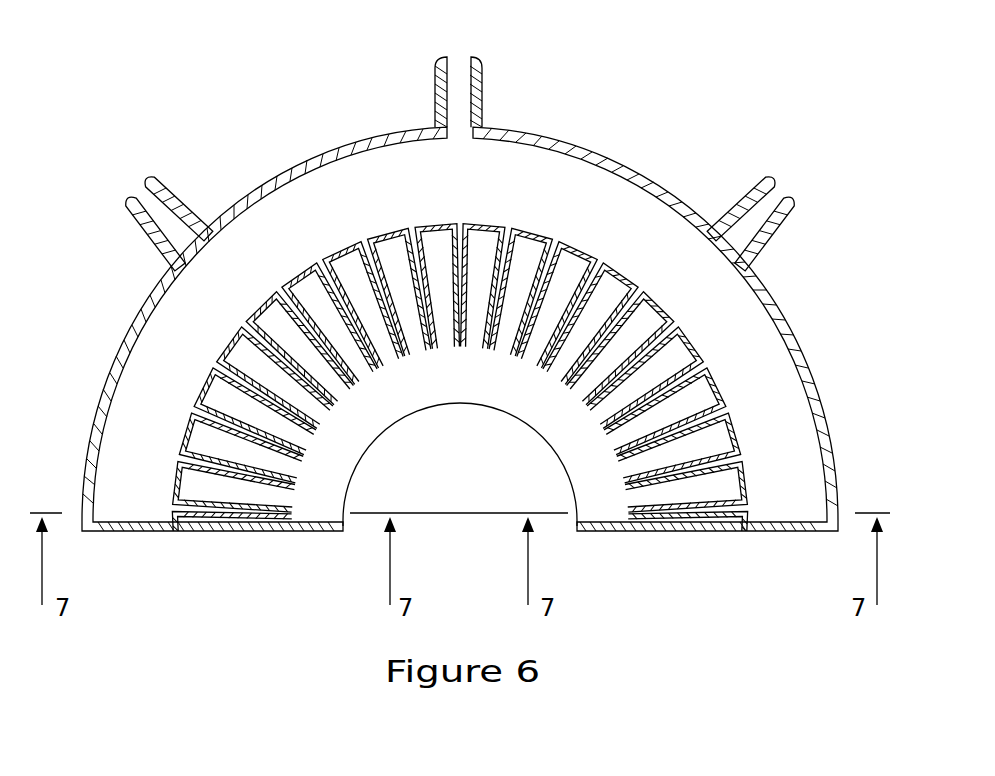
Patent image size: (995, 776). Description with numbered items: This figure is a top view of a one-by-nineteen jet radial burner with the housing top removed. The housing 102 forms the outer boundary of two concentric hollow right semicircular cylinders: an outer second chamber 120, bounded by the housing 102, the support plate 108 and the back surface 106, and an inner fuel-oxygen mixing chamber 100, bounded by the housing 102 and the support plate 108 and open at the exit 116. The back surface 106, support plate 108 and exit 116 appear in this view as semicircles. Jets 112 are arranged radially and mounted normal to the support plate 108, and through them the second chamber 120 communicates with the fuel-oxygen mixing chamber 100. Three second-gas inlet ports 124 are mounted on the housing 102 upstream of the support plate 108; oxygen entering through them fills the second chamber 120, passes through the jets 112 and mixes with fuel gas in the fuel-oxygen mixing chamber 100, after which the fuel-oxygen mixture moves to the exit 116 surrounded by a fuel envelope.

The fuel-oxygen mixing chamber 100 is at (333, 448).
The housing 102 is at (140, 287).
The back surface 106 is at (593, 157).
The support plate 108 is at (388, 228).
The jets 112 is at (494, 345).
The exit 116 is at (545, 440).
The second chamber 120 is at (262, 272).
The second-gas inlet ports 124 is at (483, 100).